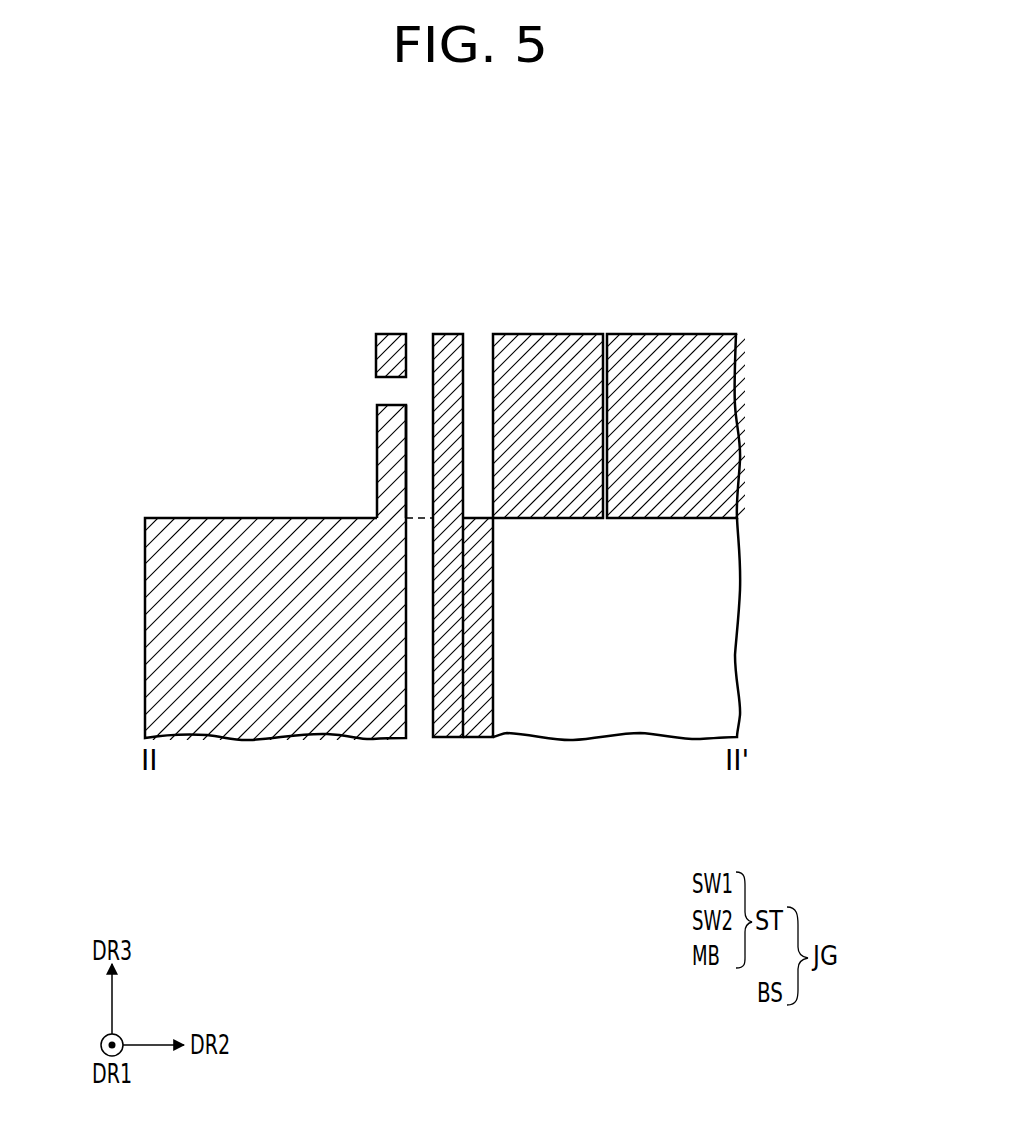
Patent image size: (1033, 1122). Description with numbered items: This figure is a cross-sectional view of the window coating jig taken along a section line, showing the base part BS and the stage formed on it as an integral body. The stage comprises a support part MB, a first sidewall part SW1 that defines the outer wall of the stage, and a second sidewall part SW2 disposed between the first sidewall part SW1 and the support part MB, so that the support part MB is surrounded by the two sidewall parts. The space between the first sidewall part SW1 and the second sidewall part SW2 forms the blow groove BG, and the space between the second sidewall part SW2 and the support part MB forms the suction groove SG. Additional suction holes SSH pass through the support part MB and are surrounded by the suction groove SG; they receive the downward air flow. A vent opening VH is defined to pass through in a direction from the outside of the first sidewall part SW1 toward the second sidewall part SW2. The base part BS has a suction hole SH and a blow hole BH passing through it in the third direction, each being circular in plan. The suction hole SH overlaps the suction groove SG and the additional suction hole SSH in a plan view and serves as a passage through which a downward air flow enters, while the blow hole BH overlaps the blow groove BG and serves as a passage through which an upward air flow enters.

The base part BS is at (157, 627).
The first sidewall part SW1 is at (385, 468).
The second sidewall part SW2 is at (449, 334).
The support part MB is at (693, 352).
The vent opening VH is at (388, 405).
The blow groove BG is at (418, 368).
The suction groove SG is at (478, 360).
The additional suction hole SSH is at (605, 340).
The suction hole SH is at (476, 707).
The blow hole BH is at (418, 714).